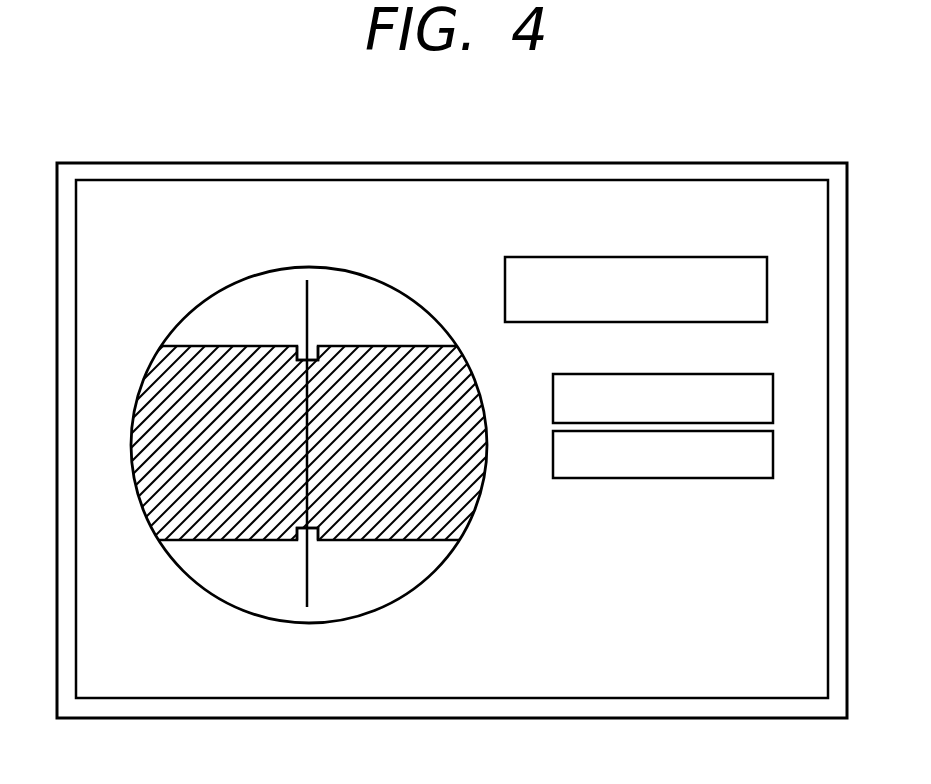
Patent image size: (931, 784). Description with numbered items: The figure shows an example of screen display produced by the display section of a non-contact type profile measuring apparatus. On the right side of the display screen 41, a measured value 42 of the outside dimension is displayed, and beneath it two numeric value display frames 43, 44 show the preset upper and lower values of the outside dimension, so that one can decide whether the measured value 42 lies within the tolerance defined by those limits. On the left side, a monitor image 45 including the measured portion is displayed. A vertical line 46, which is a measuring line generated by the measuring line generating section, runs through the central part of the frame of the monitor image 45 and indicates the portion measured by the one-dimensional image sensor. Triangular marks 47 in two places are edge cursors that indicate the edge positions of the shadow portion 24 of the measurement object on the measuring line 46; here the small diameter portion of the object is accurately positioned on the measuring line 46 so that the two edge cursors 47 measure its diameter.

The display screen 41 is at (745, 197).
The measured value 42 is at (720, 257).
The numeric value display frame 43 is at (607, 374).
The numeric value display frame 44 is at (617, 478).
The monitor image 45 is at (330, 268).
The vertical line 46 is at (309, 320).
The triangular marks 47 is at (318, 358).
The shadow portion 24 is at (450, 503).